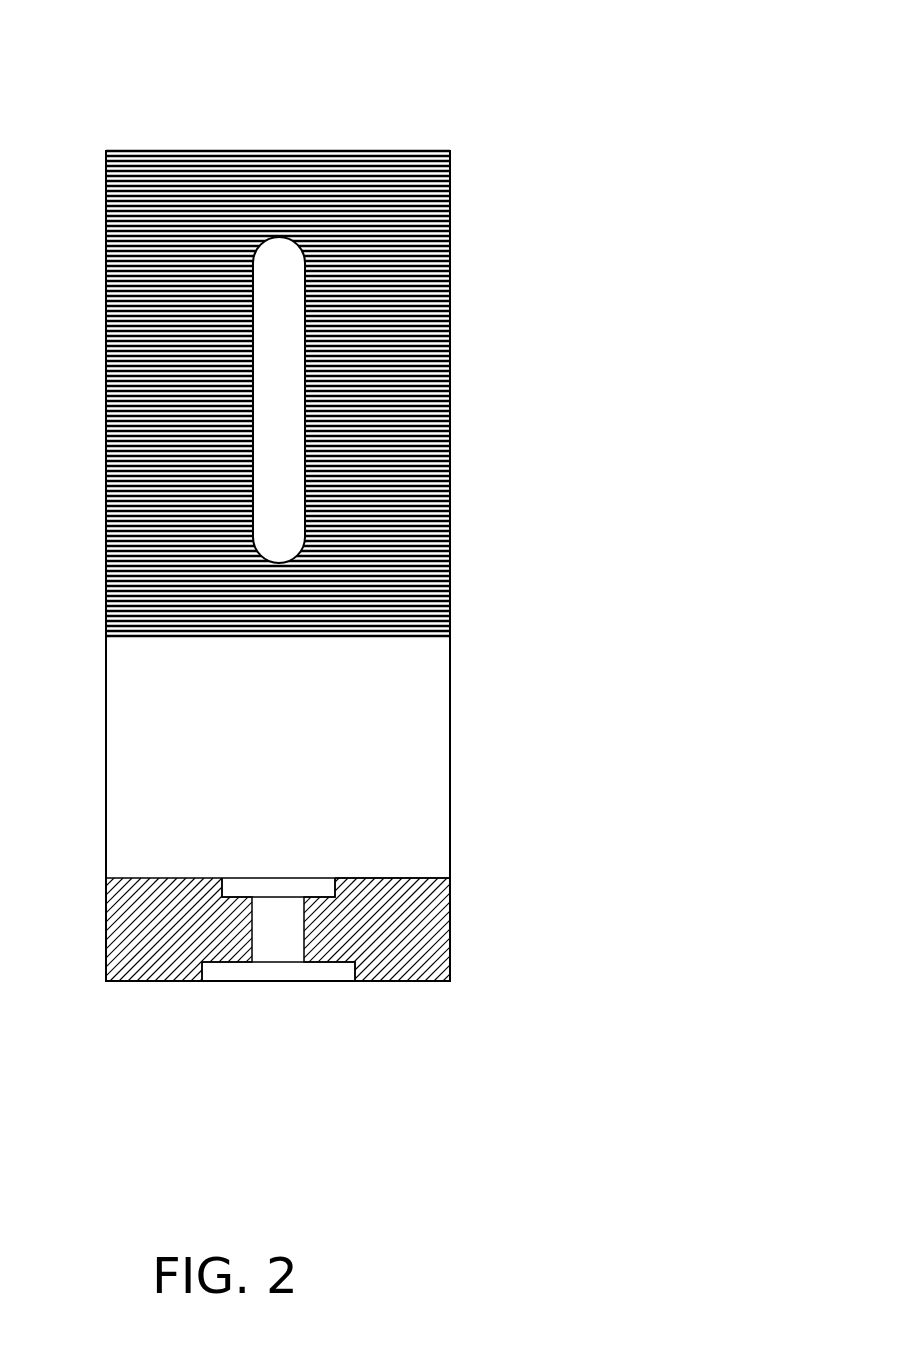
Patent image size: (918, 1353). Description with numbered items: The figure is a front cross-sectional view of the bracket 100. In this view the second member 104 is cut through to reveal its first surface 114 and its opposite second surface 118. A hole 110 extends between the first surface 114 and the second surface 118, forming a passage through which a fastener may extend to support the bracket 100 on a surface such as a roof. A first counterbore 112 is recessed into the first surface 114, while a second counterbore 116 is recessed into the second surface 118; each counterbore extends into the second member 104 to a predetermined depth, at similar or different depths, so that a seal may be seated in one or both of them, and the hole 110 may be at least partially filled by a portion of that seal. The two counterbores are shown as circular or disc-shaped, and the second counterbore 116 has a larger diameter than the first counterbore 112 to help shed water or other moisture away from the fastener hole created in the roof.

The bracket 100 is at (510, 45).
The second member 104 is at (432, 932).
The hole 110 is at (277, 1003).
The first counterbore 112 is at (221, 891).
The first surface 114 is at (430, 878).
The second counterbore 116 is at (201, 974).
The second surface 118 is at (433, 982).